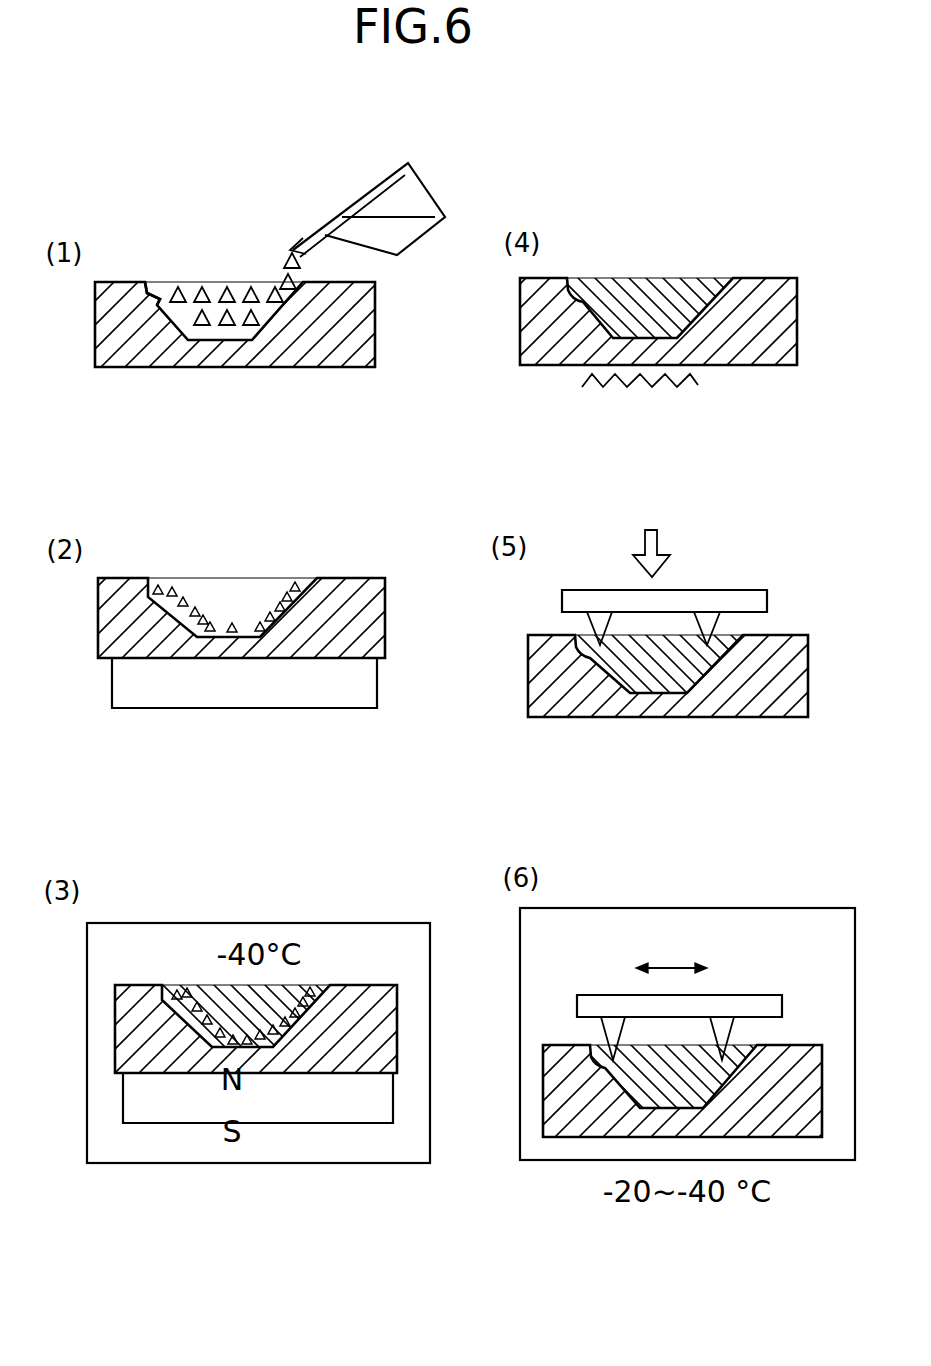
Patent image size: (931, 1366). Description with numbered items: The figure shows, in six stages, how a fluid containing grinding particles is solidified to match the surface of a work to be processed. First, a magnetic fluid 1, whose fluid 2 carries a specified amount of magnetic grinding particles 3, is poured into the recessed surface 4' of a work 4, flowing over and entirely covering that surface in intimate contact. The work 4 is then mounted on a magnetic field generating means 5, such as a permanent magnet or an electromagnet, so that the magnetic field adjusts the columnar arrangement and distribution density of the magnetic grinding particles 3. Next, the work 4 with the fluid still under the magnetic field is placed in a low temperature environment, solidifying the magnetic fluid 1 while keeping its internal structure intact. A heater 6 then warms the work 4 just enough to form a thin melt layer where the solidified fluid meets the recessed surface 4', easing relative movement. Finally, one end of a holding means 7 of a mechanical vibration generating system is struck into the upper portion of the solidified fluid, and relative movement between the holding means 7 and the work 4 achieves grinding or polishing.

The magnetic fluid 1 is at (360, 232).
The fluid 2 is at (188, 288).
The magnetic grinding particles 3 is at (230, 293).
The work 4 is at (465, 683).
The recessed surface 4' is at (162, 360).
The magnetic field generating means 5 is at (312, 685).
The heater 6 is at (591, 378).
The holding means 7 is at (593, 603).